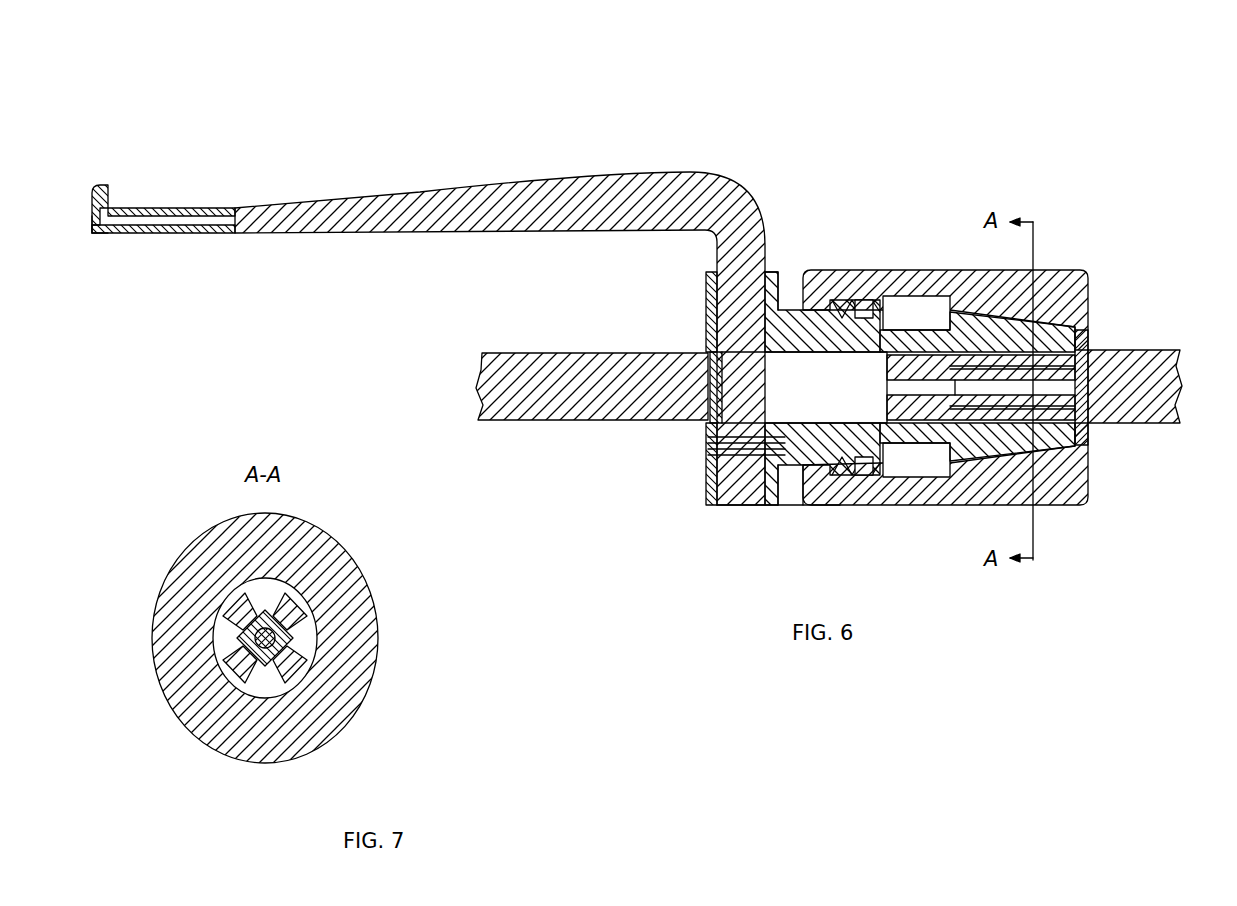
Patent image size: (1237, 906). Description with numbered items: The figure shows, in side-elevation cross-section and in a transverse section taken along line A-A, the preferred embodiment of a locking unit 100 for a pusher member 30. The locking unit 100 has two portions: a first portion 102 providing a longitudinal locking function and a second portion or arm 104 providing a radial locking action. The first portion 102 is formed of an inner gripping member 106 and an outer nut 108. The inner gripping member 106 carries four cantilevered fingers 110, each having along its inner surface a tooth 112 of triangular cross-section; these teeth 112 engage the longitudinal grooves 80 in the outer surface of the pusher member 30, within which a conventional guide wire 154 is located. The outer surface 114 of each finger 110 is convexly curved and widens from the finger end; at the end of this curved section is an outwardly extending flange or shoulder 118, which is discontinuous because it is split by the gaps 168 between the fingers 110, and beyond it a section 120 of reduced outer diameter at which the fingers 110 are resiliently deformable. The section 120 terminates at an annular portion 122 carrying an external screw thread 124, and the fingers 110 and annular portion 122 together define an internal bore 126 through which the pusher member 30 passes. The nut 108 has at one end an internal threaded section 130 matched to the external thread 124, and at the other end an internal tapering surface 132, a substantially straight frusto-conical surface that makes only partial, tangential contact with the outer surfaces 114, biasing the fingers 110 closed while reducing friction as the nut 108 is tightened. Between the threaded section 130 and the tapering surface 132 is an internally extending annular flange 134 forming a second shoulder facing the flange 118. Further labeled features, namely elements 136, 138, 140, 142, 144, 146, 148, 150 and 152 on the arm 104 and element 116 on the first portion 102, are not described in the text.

In FIG. 6, the pusher member 30 is at (644, 436).
In FIG. 7, the pusher member 30 is at (222, 612).
In FIG. 6, the longitudinal grooves 80 is at (981, 387).
In FIG. 7, the longitudinal grooves 80 is at (278, 642).
In FIG. 6, the locking unit 100 is at (778, 138).
In FIG. 6, the first portion 102 is at (1035, 125).
In FIG. 6, the arm 104 is at (500, 282).
In FIG. 6, the inner gripping member 106 is at (838, 268).
In FIG. 6, the outer nut 108 is at (1066, 268).
In FIG. 6, the cantilevered fingers 110 is at (978, 492).
In FIG. 7, the cantilevered fingers 110 is at (300, 545).
In FIG. 7, the tooth 112 is at (290, 675).
In FIG. 6, the outer surface 114 is at (948, 268).
In FIG. 6, the rear end 116 is at (1078, 450).
In FIG. 6, the outwardly extending flange 118 is at (932, 272).
In FIG. 6, the section of reduced outer diameter 120 is at (897, 480).
In FIG. 6, the annular portion 122 is at (792, 482).
In FIG. 6, the external screw thread 124 is at (818, 268).
In FIG. 6, the internal bore 126 is at (718, 472).
In FIG. 6, the internal threaded section 130 is at (826, 505).
In FIG. 6, the internal tapering surface 132 is at (968, 268).
In FIG. 6, the internally extending annular flange 134 is at (858, 268).
In FIG. 6, the arm 136 is at (388, 143).
In FIG. 6, the wall 138 is at (717, 258).
In FIG. 6, the lower flange 140 is at (708, 500).
In FIG. 6, the lip 142 is at (706, 300).
In FIG. 6, the washer 144 is at (712, 362).
In FIG. 6, the base 146 is at (733, 505).
In FIG. 6, the plate 148 is at (126, 240).
In FIG. 6, the end portion 150 is at (92, 237).
In FIG. 6, the hook 152 is at (99, 185).
In FIG. 7, the guide wire 154 is at (352, 572).
In FIG. 6, the gaps 168 is at (1085, 365).
In FIG. 7, the gaps 168 is at (255, 720).